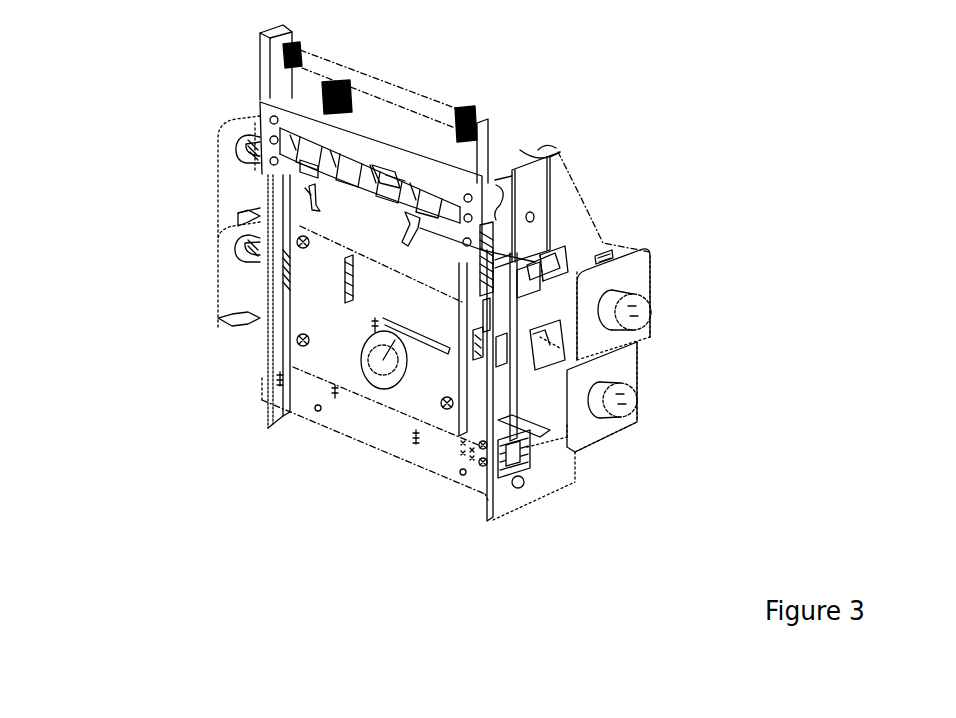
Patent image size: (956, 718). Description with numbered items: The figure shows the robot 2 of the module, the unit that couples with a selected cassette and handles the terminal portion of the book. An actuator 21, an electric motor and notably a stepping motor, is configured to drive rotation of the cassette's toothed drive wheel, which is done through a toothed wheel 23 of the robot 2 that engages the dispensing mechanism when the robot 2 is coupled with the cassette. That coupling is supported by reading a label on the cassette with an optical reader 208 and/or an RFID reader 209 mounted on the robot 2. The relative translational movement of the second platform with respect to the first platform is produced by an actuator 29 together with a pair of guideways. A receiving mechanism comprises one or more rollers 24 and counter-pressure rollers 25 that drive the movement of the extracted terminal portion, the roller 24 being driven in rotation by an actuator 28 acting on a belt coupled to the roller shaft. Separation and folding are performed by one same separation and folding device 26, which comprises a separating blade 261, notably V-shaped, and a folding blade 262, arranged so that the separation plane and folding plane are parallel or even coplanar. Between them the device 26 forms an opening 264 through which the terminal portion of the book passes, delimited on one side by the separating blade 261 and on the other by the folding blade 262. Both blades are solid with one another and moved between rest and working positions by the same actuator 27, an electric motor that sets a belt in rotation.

The robot 2 is at (97, 59).
The actuator 21 is at (607, 337).
The toothed wheel 23 is at (510, 235).
The roller 24 is at (413, 214).
The counter-pressure roller 25 is at (393, 197).
The separation device 26 is at (260, 168).
The actuator 27 is at (233, 300).
The actuator 28 is at (233, 202).
The actuator 29 is at (595, 430).
The optical reader 208 is at (311, 205).
The RFID reader 209 is at (385, 363).
The separating blade 261 is at (316, 166).
The folding blade 262 is at (320, 135).
The opening 264 is at (380, 177).